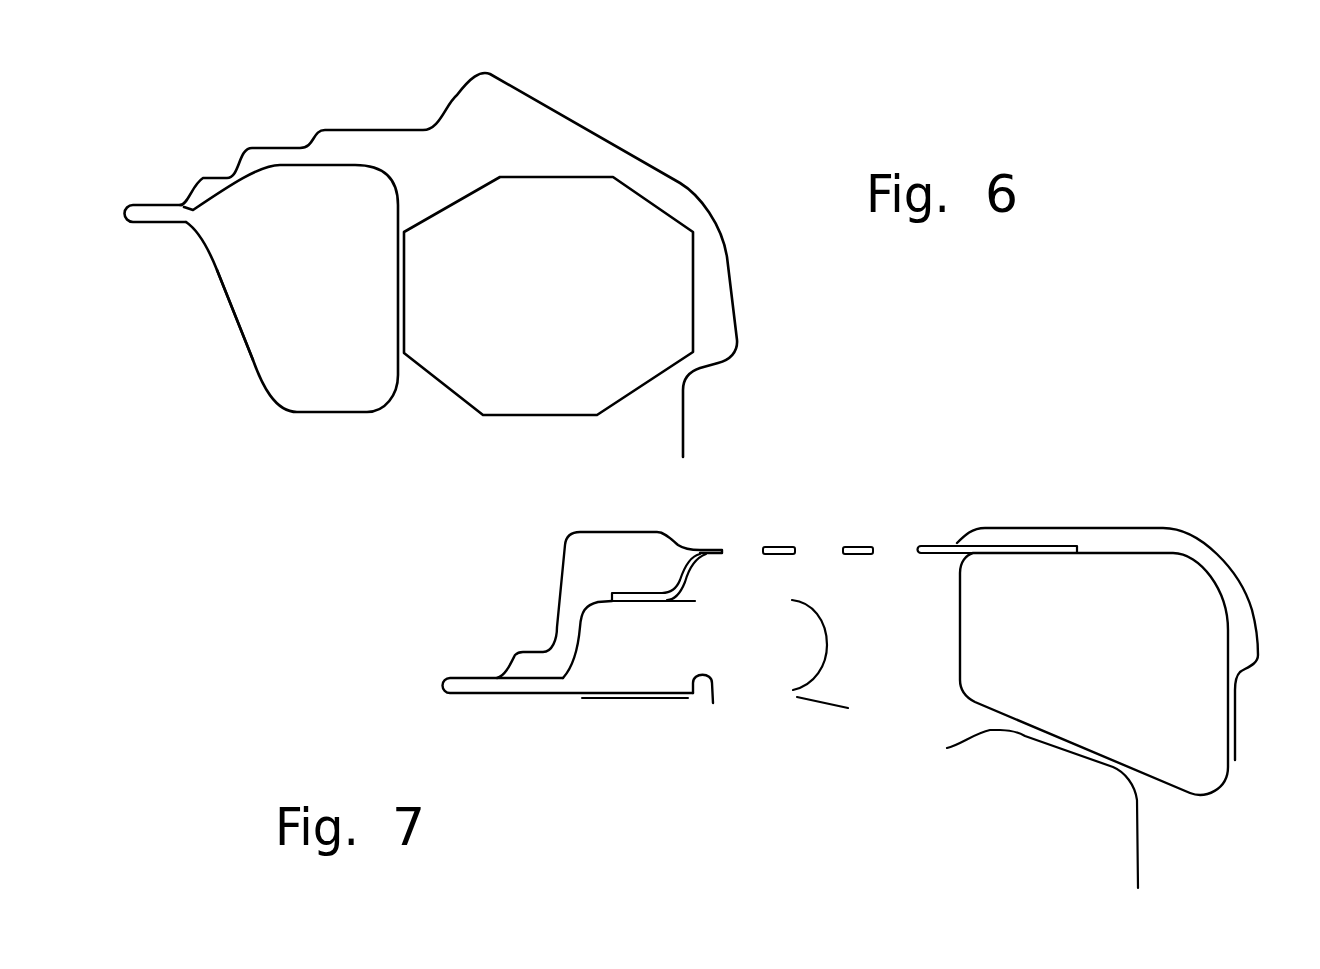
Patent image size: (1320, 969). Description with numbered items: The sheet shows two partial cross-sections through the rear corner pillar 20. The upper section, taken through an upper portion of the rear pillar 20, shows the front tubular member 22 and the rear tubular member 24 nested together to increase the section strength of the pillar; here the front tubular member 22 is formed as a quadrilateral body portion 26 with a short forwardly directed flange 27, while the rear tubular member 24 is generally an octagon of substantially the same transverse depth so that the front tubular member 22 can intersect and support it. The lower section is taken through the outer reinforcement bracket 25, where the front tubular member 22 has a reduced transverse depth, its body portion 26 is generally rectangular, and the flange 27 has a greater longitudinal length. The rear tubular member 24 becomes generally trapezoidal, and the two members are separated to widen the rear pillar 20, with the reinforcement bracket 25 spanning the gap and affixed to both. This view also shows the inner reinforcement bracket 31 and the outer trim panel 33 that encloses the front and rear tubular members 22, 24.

In FIG. 6, the rear corner pillar 20 is at (446, 296).
In FIG. 7, the rear corner pillar 20 is at (851, 677).
In FIG. 6, the front tubular member 22 is at (315, 413).
In FIG. 7, the front tubular member 22 is at (577, 633).
In FIG. 6, the rear tubular member 24 is at (658, 205).
In FIG. 7, the rear tubular member 24 is at (960, 627).
In FIG. 7, the outer reinforcement bracket 25 is at (675, 571).
In FIG. 6, the body portion 26 is at (253, 358).
In FIG. 7, the body portion 26 is at (713, 703).
In FIG. 6, the flange 27 is at (157, 223).
In FIG. 7, the flange 27 is at (497, 693).
In FIG. 7, the inner reinforcement bracket 31 is at (1005, 733).
In FIG. 6, the outer trim panel 33 is at (590, 122).
In FIG. 7, the outer trim panel 33 is at (678, 543).